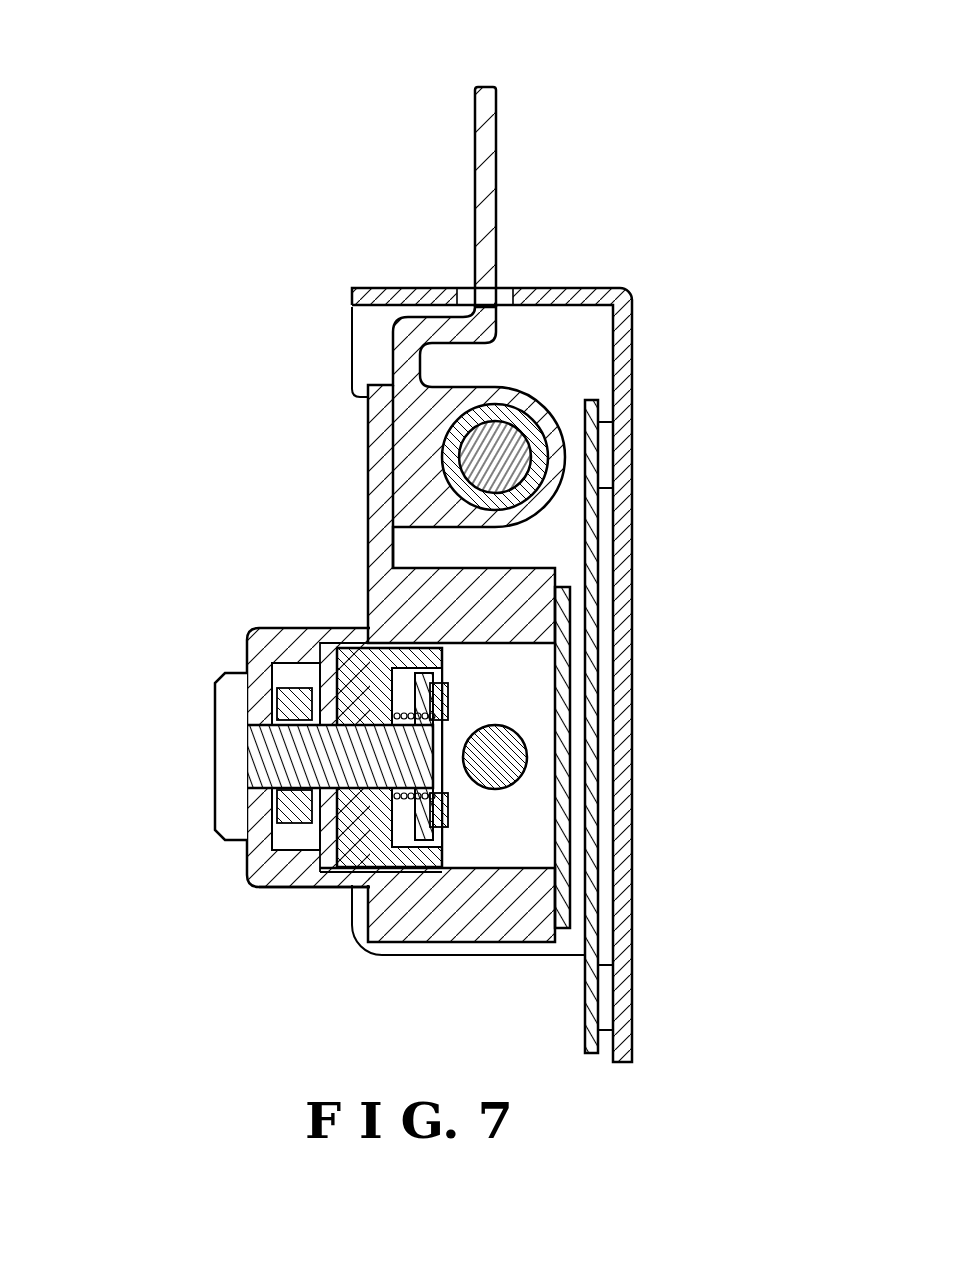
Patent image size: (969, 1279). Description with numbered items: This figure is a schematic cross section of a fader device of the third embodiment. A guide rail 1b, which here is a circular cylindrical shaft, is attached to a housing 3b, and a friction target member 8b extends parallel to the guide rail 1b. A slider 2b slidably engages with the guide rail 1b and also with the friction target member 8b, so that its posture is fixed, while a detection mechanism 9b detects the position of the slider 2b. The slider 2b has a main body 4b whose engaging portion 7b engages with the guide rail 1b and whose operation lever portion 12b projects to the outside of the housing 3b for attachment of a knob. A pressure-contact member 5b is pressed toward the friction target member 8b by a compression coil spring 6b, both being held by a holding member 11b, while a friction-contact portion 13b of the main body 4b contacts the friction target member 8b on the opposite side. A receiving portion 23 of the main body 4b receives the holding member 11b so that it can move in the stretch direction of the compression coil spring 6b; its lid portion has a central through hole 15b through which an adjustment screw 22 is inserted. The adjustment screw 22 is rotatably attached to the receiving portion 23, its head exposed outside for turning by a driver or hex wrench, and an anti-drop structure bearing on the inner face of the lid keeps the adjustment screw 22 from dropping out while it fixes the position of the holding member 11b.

The guide rail 1b is at (507, 437).
The slider 2b is at (280, 427).
The housing 3b is at (593, 288).
The main body 4b is at (365, 558).
The pressure-contact member 5b is at (462, 698).
The compression coil spring 6b is at (325, 673).
The engaging portion 7b is at (556, 450).
The friction target member 8b is at (507, 743).
The detection mechanism 9b is at (603, 603).
The holding member 11b is at (307, 628).
The operation lever portion 12b is at (497, 143).
The friction-contact portion 13b is at (532, 768).
The through hole 15b is at (248, 787).
The adjustment screw 22 is at (213, 758).
The receiving portion 23 is at (300, 888).